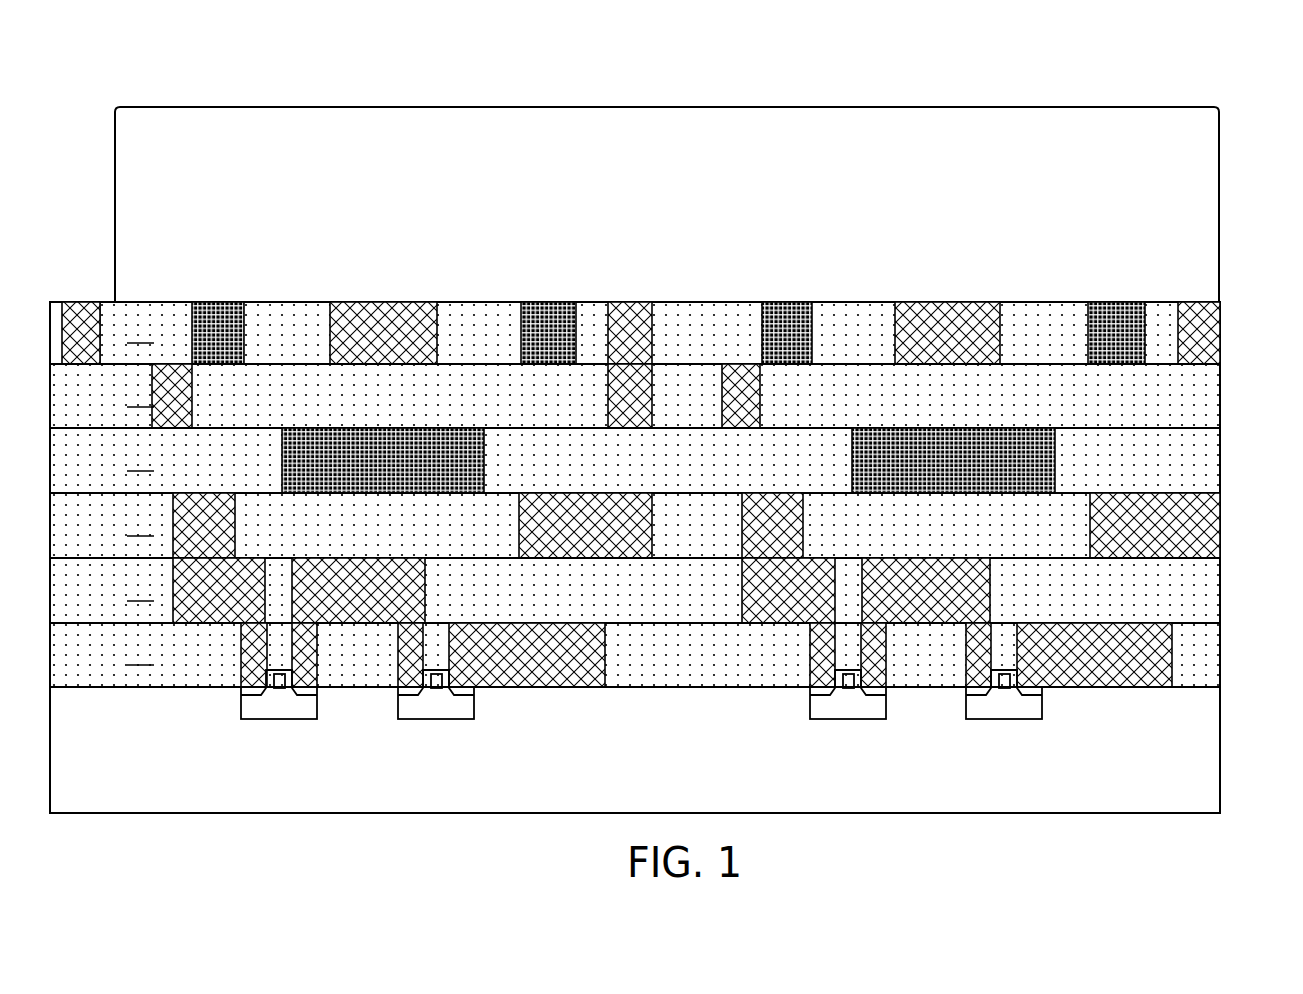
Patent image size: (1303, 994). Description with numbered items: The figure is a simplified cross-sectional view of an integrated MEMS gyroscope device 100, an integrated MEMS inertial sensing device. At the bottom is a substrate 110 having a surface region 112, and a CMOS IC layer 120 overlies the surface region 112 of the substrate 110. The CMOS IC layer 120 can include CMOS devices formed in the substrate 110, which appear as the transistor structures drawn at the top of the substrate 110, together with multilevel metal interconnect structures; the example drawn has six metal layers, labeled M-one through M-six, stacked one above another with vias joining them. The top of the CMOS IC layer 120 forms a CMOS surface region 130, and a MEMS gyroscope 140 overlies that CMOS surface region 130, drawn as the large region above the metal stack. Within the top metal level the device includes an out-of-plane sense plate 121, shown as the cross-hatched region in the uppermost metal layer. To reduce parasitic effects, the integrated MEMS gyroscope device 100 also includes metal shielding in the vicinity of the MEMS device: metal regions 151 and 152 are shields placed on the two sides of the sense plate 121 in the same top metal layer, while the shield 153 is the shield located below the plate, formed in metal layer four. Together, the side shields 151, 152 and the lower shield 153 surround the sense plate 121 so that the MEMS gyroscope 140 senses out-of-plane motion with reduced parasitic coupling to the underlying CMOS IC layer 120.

The integrated MEMS gyroscope device 100 is at (665, 427).
The substrate 110 is at (662, 741).
The surface region 112 is at (771, 690).
The CMOS IC layer 120 is at (664, 486).
The out-of-plane sense plate 121 is at (381, 302).
The CMOS surface region 130 is at (278, 300).
The MEMS gyroscope 140 is at (115, 107).
The metal region 151 is at (546, 302).
The metal region 152 is at (220, 302).
The shield below the plate 153 is at (390, 428).